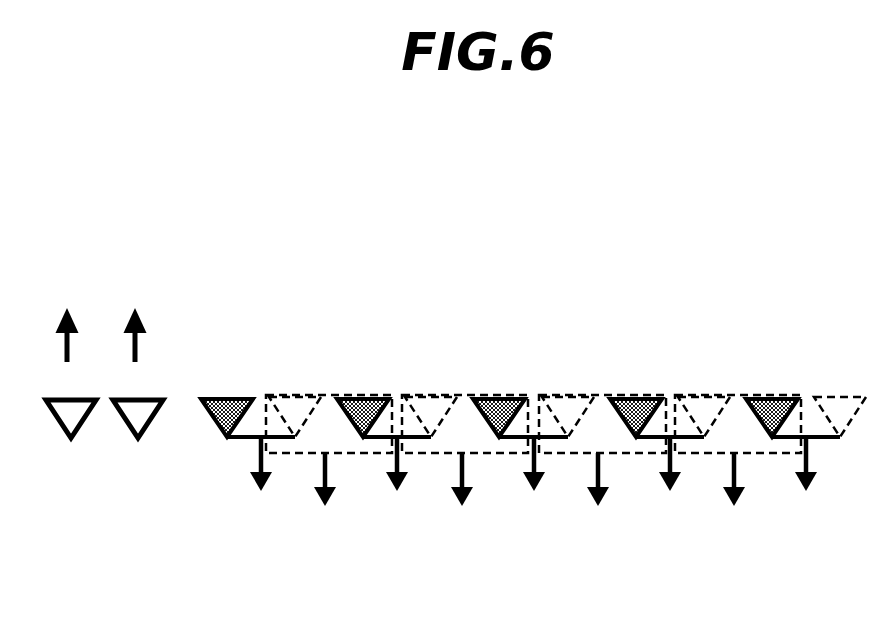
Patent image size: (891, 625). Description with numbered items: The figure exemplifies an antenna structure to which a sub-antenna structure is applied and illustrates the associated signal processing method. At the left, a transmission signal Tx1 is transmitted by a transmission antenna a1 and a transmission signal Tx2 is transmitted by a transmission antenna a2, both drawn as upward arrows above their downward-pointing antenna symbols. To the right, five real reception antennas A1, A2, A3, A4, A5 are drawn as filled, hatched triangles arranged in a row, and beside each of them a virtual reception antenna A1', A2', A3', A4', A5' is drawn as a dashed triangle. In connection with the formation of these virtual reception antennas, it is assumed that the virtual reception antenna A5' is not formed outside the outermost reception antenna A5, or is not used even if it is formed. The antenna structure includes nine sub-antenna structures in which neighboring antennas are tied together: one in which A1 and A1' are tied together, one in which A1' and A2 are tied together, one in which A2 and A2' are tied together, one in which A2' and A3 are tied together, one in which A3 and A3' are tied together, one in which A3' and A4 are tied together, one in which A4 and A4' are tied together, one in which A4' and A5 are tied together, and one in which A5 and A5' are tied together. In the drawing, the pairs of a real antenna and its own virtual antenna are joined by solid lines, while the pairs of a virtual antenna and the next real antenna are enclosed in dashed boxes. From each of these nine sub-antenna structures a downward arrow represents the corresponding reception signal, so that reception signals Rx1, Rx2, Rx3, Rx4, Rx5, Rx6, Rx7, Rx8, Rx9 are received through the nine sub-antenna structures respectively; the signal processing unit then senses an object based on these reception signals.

The transmission signal Tx1 is at (67, 321).
The transmission signal Tx2 is at (135, 321).
The transmission antenna a1 is at (71, 402).
The transmission antenna a2 is at (138, 402).
The real reception antenna A1 is at (227, 404).
The virtual reception antenna A1' is at (295, 404).
The real reception antenna A2 is at (363, 404).
The virtual reception antenna A2' is at (431, 404).
The real reception antenna A3 is at (499, 404).
The virtual reception antenna A3' is at (568, 404).
The real reception antenna A4 is at (636, 404).
The virtual reception antenna A4' is at (704, 404).
The real reception antenna A5 is at (772, 404).
The virtual reception antenna A5' is at (840, 404).
The reception signal Rx1 is at (261, 482).
The reception signal Rx2 is at (329, 468).
The reception signal Rx3 is at (397, 482).
The reception signal Rx4 is at (465, 468).
The reception signal Rx5 is at (533, 482).
The reception signal Rx6 is at (602, 468).
The reception signal Rx7 is at (670, 482).
The reception signal Rx8 is at (738, 468).
The reception signal Rx9 is at (806, 482).